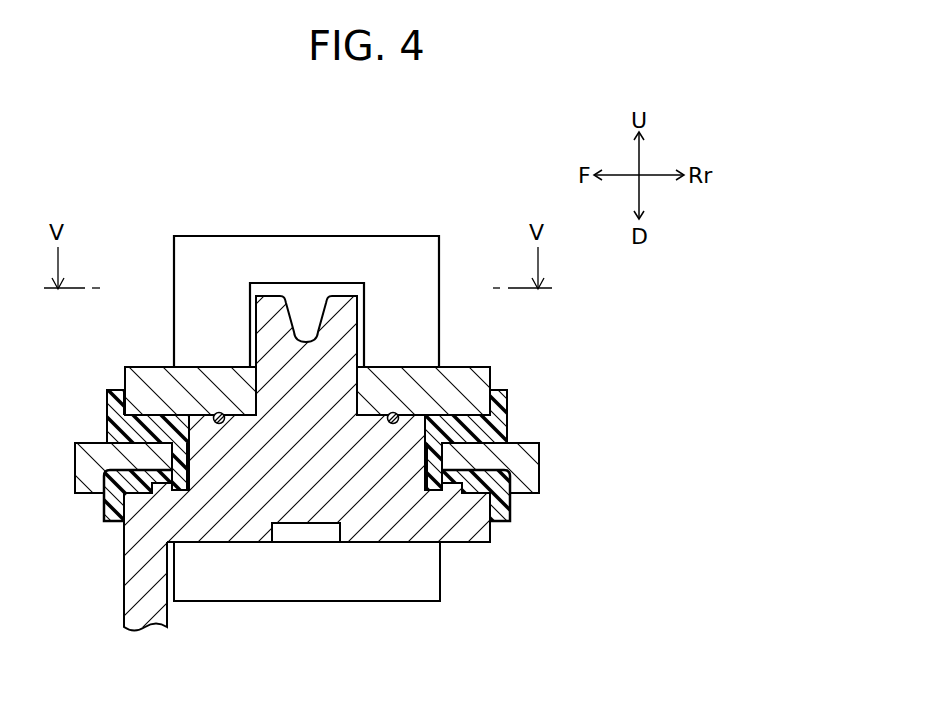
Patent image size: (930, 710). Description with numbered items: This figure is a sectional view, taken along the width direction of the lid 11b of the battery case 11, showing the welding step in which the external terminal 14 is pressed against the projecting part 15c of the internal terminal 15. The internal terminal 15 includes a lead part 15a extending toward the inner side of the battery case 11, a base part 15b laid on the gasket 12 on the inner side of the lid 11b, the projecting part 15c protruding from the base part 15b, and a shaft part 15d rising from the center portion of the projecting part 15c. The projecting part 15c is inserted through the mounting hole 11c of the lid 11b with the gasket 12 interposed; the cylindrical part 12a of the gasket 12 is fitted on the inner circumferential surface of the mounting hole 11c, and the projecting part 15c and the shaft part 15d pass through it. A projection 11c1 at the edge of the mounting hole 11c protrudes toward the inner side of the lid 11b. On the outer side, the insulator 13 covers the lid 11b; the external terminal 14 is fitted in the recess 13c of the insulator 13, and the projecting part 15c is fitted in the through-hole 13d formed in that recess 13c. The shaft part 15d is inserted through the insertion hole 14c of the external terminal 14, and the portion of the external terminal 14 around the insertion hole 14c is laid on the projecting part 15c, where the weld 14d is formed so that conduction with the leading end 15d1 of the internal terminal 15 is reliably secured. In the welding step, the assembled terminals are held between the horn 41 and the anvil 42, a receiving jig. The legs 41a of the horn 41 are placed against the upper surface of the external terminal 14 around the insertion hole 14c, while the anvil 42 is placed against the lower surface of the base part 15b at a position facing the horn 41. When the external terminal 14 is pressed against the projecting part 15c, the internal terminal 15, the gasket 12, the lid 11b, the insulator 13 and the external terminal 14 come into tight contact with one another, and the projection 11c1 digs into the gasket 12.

The battery case 11 is at (548, 480).
The lid 11b is at (542, 448).
The mounting hole 11c is at (437, 458).
The projection 11c1 is at (452, 475).
The gasket 12 is at (516, 515).
The cylindrical part 12a is at (170, 460).
The insulator 13 is at (512, 415).
The recess 13c is at (160, 417).
The through-hole 13d is at (220, 430).
The external terminal 14 is at (497, 370).
The insertion hole 14c is at (253, 372).
The weld 14d is at (390, 430).
The internal terminal 15 is at (480, 548).
The lead part 15a is at (124, 603).
The base part 15b is at (340, 530).
The projecting part 15c is at (404, 416).
The shaft part 15d is at (358, 392).
The leading end 15d1 is at (332, 298).
The horn 41 is at (165, 255).
The legs 41a is at (212, 367).
The anvil 42 is at (442, 578).